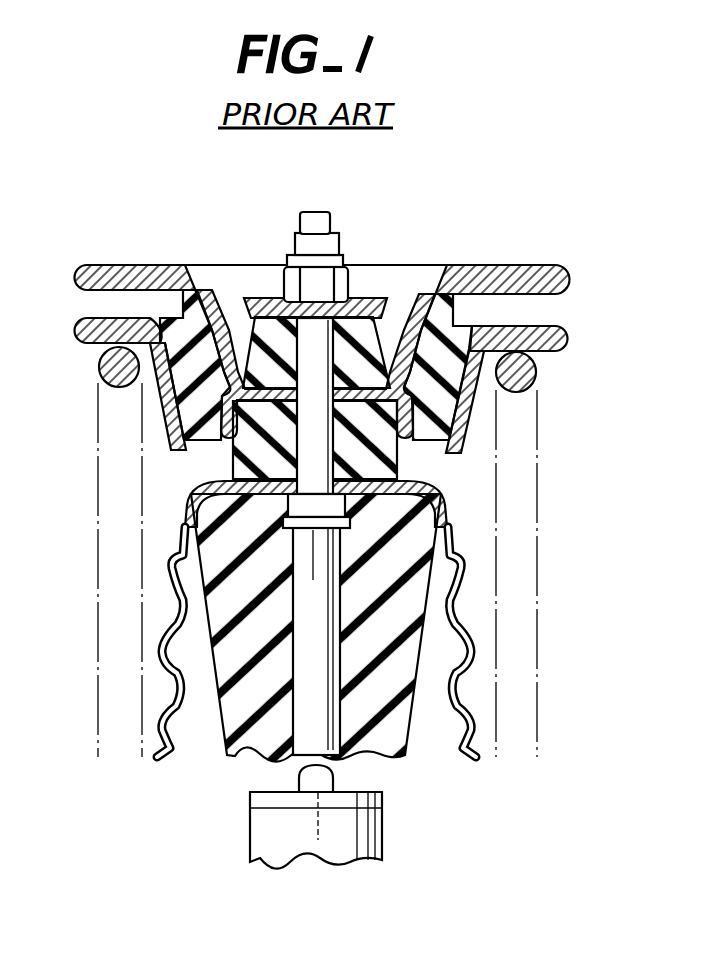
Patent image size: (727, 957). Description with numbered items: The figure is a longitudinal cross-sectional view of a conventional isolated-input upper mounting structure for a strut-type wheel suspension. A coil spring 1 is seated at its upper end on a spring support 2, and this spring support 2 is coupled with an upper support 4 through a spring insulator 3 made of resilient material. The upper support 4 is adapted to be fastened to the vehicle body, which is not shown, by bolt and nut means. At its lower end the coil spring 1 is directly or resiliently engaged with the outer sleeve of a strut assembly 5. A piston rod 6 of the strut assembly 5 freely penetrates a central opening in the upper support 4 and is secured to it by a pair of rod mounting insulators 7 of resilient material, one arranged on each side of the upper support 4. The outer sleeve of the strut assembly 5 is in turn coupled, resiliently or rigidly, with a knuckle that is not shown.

The coil spring 1 is at (536, 374).
The spring support 2 is at (558, 332).
The spring insulator 3 is at (190, 446).
The upper support 4 is at (510, 266).
The strut assembly 5 is at (395, 827).
The piston rod 6 is at (310, 606).
The rod mounting insulators 7 is at (250, 334).